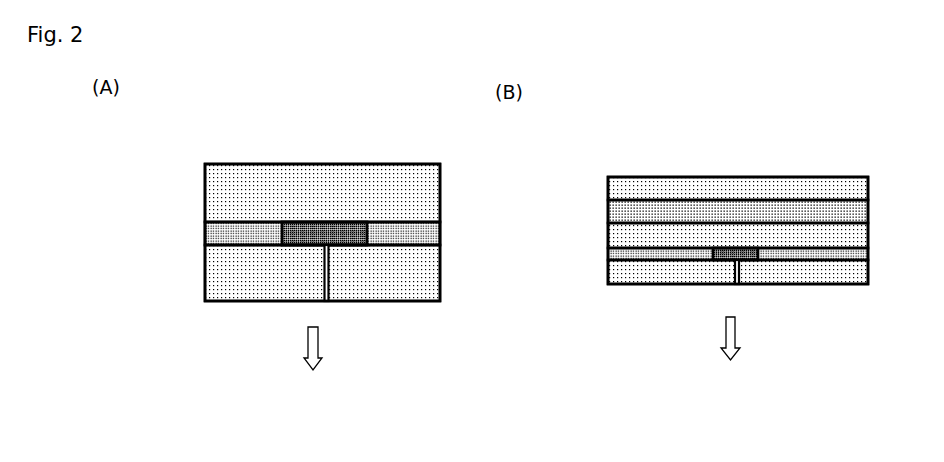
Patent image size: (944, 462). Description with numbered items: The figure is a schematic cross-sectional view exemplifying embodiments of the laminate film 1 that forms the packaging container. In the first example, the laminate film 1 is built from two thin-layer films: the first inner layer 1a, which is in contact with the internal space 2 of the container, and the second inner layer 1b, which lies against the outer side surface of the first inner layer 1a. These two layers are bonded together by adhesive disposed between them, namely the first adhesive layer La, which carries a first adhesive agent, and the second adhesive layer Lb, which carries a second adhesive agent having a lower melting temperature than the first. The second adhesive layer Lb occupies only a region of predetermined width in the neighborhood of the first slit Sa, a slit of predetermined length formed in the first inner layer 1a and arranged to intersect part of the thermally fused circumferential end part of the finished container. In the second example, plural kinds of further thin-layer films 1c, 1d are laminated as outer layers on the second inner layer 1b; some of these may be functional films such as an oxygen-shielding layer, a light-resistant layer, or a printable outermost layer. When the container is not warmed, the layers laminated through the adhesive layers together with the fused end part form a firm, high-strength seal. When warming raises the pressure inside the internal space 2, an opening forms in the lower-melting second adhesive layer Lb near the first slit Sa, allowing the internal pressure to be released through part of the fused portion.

The laminate film 1 is at (330, 157).
The first inner layer 1a is at (205, 270).
The second inner layer 1b is at (205, 192).
The thin-layer film 1c is at (608, 215).
The thin-layer film 1d is at (608, 192).
The first adhesive layer La is at (205, 230).
The second adhesive layer Lb is at (310, 237).
The first slit Sa is at (329, 303).
The internal space 2 is at (522, 357).